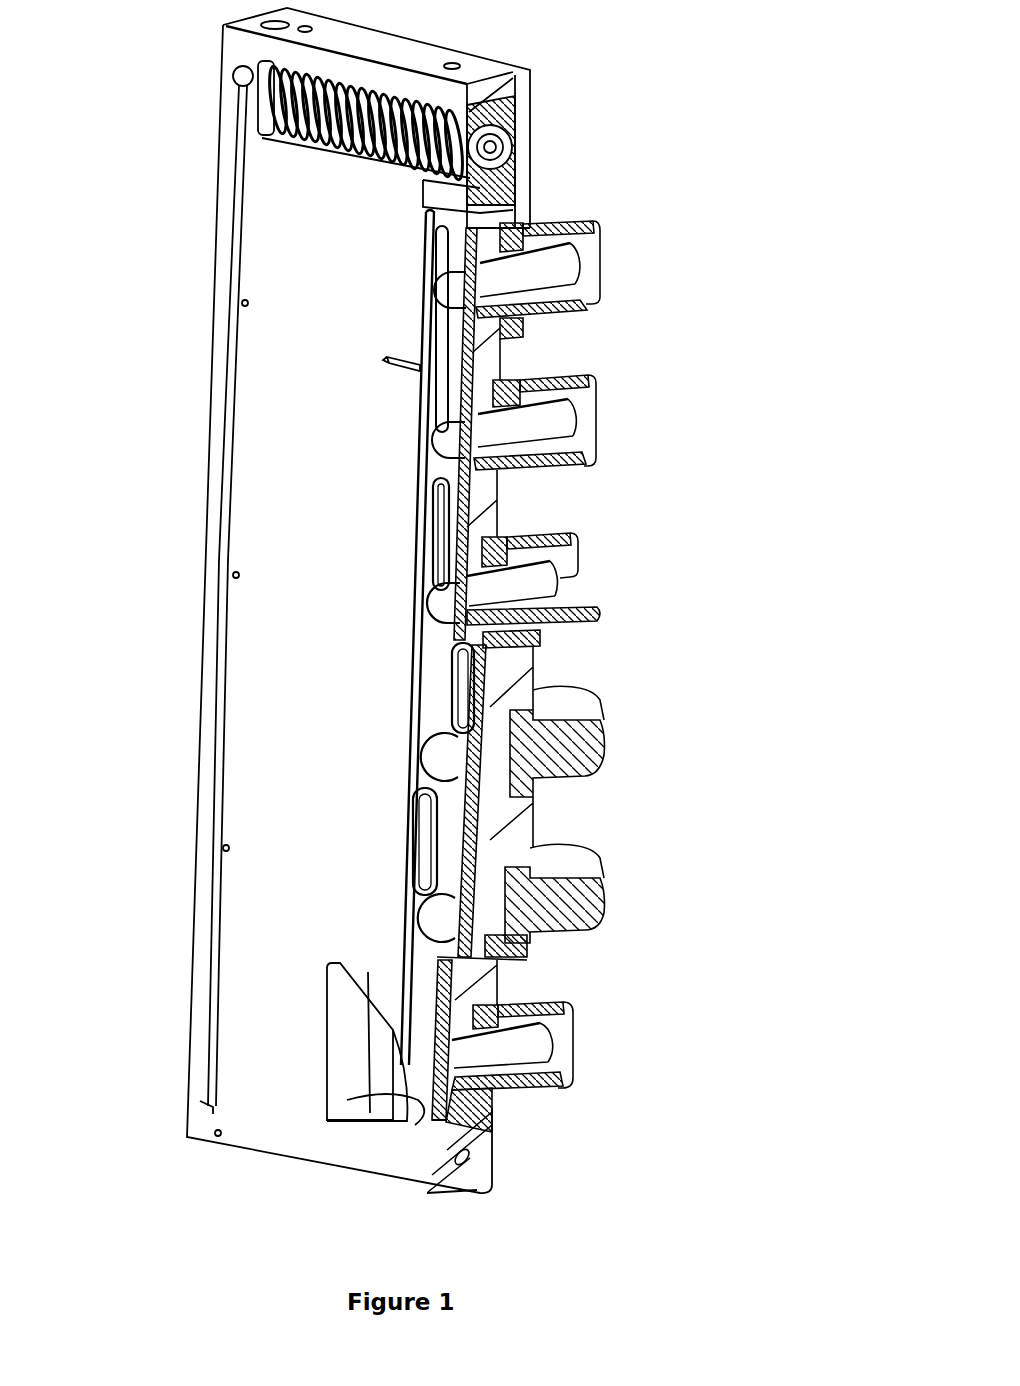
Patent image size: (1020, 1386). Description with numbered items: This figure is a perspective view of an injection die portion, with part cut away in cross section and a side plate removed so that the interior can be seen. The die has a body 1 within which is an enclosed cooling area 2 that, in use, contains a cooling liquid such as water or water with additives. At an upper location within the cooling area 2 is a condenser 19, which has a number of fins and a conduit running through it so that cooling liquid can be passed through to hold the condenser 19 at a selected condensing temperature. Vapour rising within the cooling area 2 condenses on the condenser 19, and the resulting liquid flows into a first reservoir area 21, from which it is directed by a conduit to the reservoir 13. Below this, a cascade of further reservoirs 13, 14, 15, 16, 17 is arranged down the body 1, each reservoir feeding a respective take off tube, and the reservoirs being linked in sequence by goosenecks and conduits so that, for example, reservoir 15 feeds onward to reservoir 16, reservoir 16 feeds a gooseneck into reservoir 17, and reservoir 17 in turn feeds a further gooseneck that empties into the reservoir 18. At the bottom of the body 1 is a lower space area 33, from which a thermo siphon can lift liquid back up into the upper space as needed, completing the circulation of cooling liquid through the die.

The body 1 is at (253, 1133).
The enclosed cooling area 2 is at (503, 183).
The first reservoir area 13 is at (453, 287).
The reservoir 14 is at (437, 443).
The reservoir 15 is at (433, 597).
The reservoir 16 is at (430, 768).
The reservoir 17 is at (433, 913).
The reservoir 18 is at (415, 1132).
The condenser 19 is at (493, 157).
The first reservoir area 21 is at (433, 200).
The lower space area 33 is at (333, 1058).